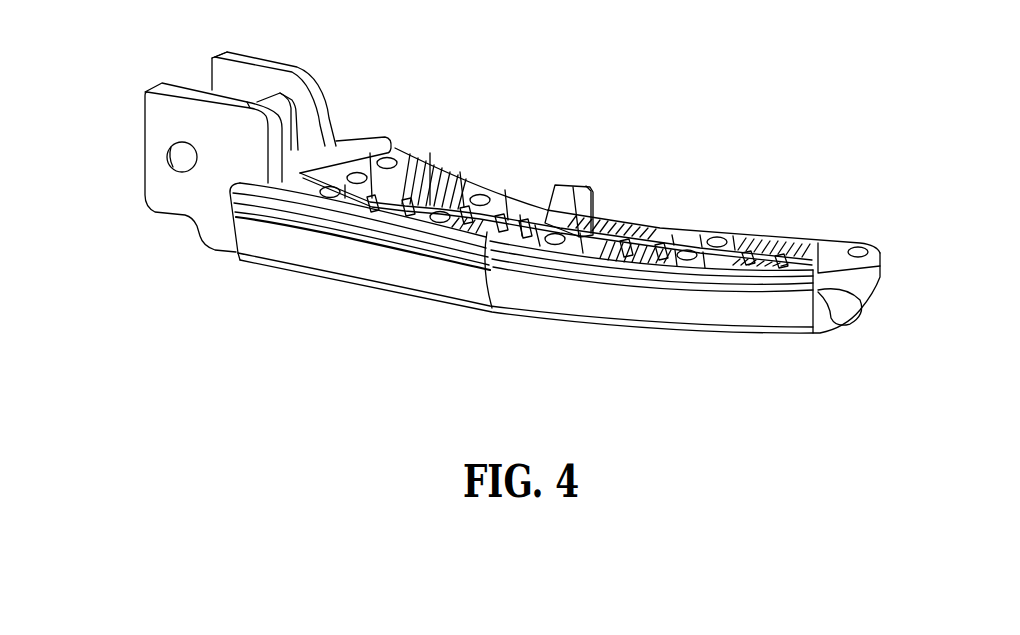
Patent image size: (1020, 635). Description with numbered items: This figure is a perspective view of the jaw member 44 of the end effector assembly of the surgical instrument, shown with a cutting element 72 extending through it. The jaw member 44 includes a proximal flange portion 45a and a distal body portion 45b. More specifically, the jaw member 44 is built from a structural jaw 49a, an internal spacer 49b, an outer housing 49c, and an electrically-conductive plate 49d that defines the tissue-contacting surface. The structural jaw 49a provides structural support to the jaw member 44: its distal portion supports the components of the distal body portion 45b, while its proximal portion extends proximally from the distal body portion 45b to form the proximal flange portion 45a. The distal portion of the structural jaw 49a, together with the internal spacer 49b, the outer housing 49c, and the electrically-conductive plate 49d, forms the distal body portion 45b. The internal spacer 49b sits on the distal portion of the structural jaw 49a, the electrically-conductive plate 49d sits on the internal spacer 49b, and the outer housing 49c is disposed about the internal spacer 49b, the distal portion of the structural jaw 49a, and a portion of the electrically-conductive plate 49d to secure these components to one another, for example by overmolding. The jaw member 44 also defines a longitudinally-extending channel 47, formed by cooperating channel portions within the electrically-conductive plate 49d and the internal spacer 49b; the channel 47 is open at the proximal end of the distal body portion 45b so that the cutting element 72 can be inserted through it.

The jaw member 44 is at (473, 203).
The proximal flange portion 45a is at (212, 171).
The distal body portion 45b is at (557, 228).
The longitudinally-extending channel 47 is at (637, 248).
The structural jaw 49a is at (210, 234).
The internal spacer 49b is at (313, 137).
The outer housing 49c is at (572, 300).
The electrically-conductive plate 49d is at (822, 243).
The cutting element 72 is at (557, 185).